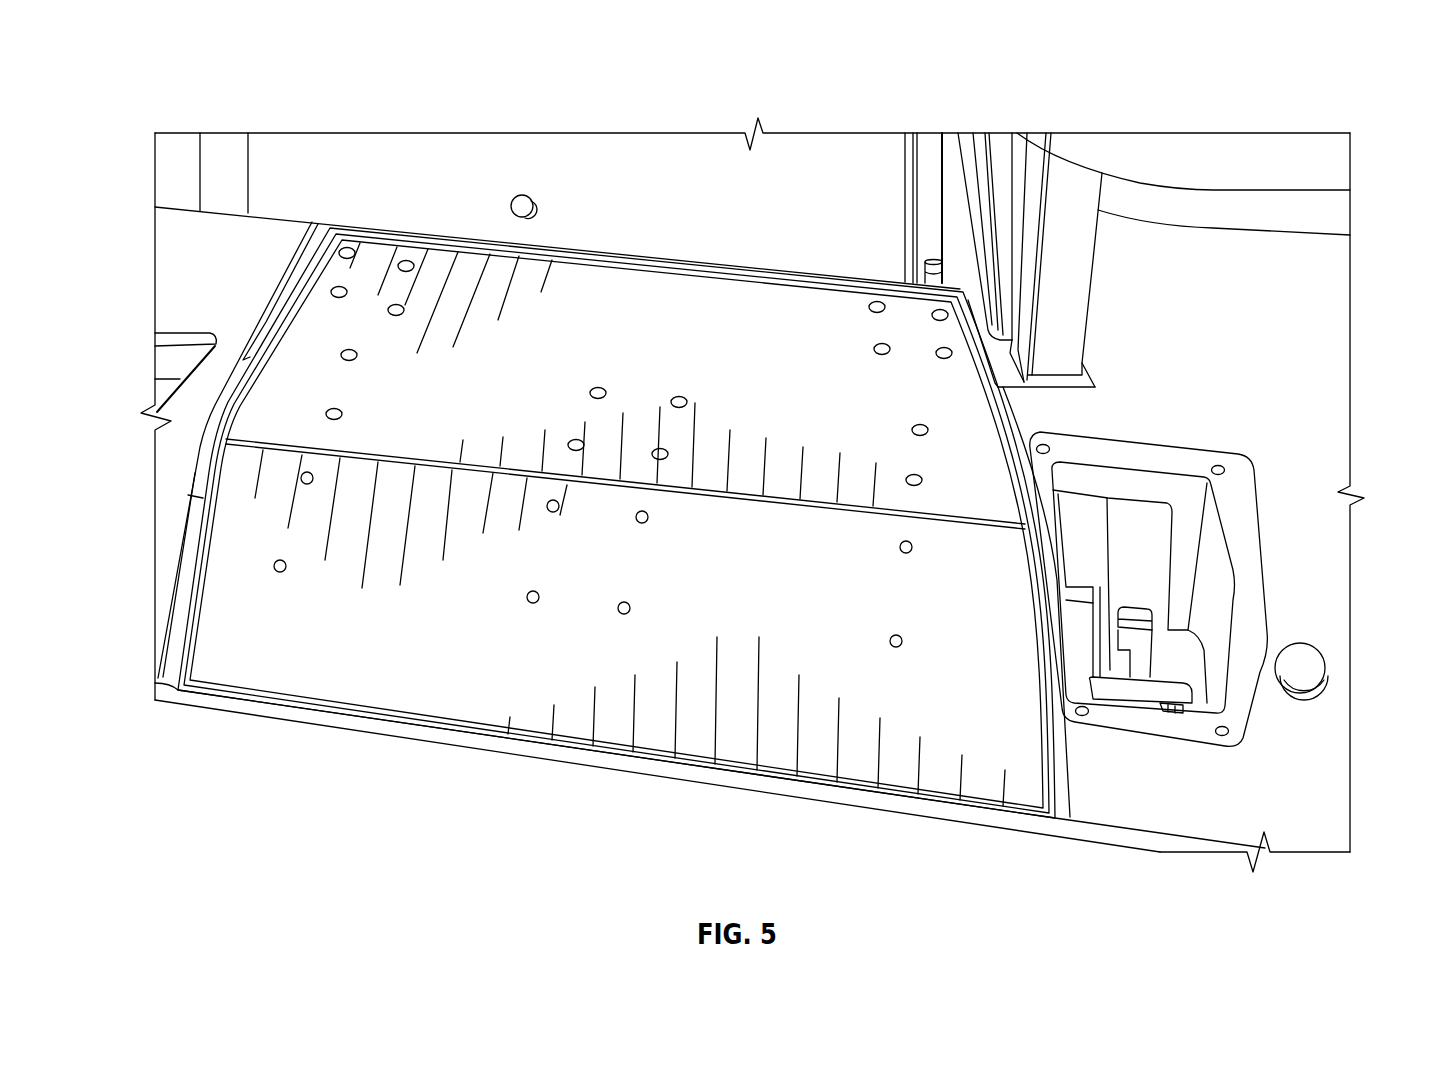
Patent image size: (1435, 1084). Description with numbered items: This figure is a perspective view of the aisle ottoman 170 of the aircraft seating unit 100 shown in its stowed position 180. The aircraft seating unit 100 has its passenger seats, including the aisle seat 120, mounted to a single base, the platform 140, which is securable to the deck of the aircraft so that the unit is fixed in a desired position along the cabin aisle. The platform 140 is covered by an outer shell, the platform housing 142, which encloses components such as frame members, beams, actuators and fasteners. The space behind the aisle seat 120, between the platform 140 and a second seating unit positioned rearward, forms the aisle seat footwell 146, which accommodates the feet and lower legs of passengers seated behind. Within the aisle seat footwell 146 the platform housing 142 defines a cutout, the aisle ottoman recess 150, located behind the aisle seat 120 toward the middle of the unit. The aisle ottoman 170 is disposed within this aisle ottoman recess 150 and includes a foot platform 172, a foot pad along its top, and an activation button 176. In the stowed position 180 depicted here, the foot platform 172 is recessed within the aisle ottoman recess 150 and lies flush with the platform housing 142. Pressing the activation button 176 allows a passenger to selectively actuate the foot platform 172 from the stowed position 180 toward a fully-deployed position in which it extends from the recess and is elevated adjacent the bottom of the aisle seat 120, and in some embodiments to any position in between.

The aircraft seating unit 100 is at (133, 90).
The aisle seat 120 is at (1299, 199).
The platform 140 is at (1312, 366).
The platform housing 142 is at (1122, 807).
The aisle seat footwell 146 is at (533, 781).
The aisle ottoman recess 150 is at (195, 474).
The aisle ottoman 170 is at (476, 711).
The foot platform 172 is at (233, 520).
The activation button 176 is at (1315, 668).
The stowed position 180 is at (138, 246).